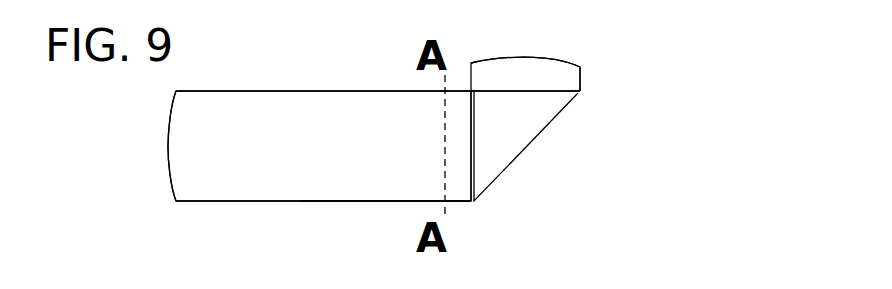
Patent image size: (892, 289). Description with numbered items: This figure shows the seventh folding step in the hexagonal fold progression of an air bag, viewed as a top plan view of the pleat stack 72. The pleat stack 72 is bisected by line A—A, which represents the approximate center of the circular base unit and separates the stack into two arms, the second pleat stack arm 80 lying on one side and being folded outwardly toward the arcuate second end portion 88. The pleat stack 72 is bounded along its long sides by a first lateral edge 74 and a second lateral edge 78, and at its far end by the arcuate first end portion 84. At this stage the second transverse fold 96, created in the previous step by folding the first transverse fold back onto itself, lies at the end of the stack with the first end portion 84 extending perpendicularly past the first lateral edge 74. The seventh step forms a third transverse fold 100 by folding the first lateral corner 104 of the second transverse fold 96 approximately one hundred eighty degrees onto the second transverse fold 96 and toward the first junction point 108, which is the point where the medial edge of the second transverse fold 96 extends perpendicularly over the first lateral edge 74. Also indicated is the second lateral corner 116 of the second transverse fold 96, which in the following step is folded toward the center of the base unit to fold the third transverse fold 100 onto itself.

The pleat stack 72 is at (285, 176).
The first lateral edge 74 is at (362, 90).
The second lateral edge 78 is at (420, 201).
The second pleat stack arm 80 is at (150, 148).
The first end portion 84 is at (552, 58).
The second end portion 88 is at (169, 173).
The second transverse fold 96 is at (542, 75).
The third transverse fold 100 is at (522, 117).
The first lateral corner 104 is at (476, 87).
The first junction point 108 is at (466, 87).
The second lateral corner 116 is at (584, 65).